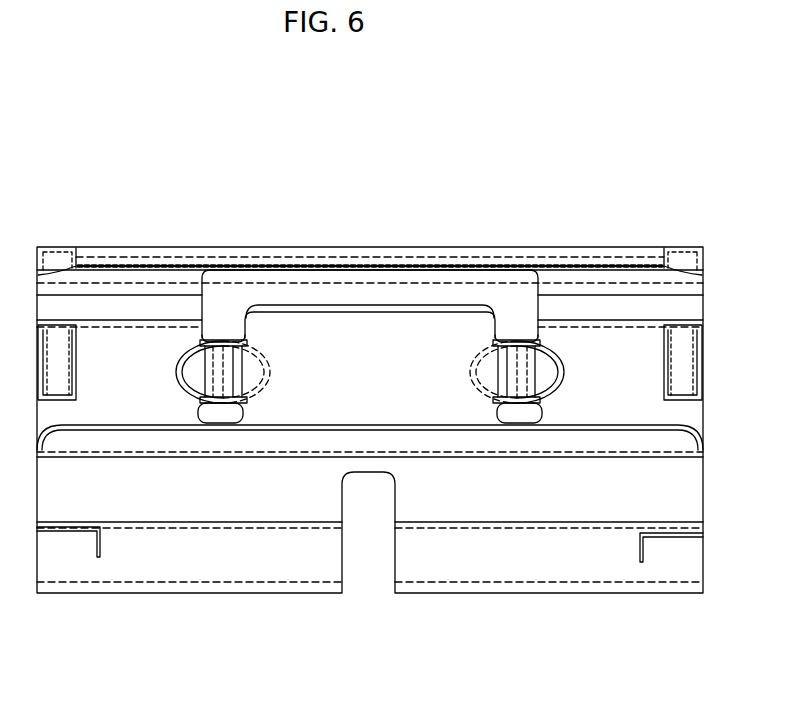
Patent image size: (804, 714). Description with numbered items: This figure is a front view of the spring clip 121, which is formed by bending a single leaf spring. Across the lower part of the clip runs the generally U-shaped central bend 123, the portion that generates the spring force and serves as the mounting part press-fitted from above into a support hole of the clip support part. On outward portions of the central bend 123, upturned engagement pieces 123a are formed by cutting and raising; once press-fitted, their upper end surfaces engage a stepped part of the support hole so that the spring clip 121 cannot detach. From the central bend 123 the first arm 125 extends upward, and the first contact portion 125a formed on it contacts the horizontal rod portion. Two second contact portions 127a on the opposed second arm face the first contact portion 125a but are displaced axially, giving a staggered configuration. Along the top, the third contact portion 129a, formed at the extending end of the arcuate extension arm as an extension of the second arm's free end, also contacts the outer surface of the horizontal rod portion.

The spring clip 121 is at (342, 236).
The central bend 123 is at (150, 570).
The engagement pieces 123a is at (66, 545).
The first arm 125 is at (458, 499).
The first contact portion 125a is at (309, 340).
The second contact portions 127a is at (115, 345).
The third contact portion 129a is at (423, 258).